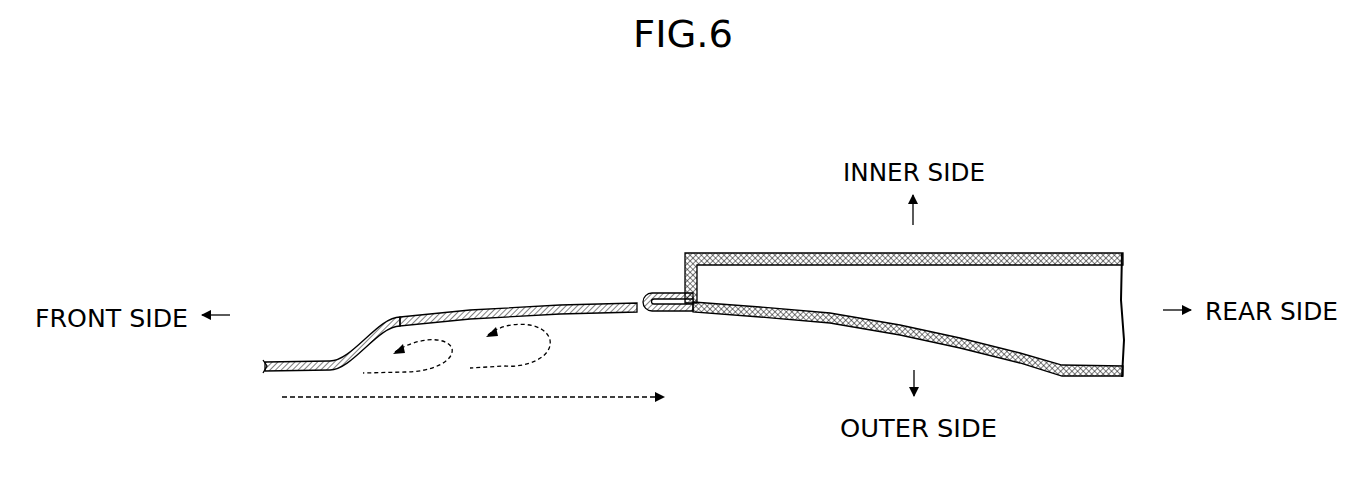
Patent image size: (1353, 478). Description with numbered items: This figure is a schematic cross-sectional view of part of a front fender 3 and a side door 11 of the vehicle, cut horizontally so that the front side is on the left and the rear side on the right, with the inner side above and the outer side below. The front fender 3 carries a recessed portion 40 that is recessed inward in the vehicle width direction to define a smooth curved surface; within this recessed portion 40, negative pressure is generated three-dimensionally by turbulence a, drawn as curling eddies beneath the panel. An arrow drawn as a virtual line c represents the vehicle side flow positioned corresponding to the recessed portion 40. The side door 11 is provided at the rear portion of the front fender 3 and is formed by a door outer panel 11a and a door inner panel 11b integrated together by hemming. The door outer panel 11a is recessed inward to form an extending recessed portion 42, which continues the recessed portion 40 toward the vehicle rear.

The front fender 3 is at (300, 360).
The recessed portion 40 is at (557, 313).
The turbulence a is at (410, 348).
The vehicle side flow c is at (418, 399).
The extending recessed portion 42 is at (795, 316).
The side door 11 is at (904, 313).
The door outer panel 11a is at (953, 336).
The door inner panel 11b is at (972, 252).